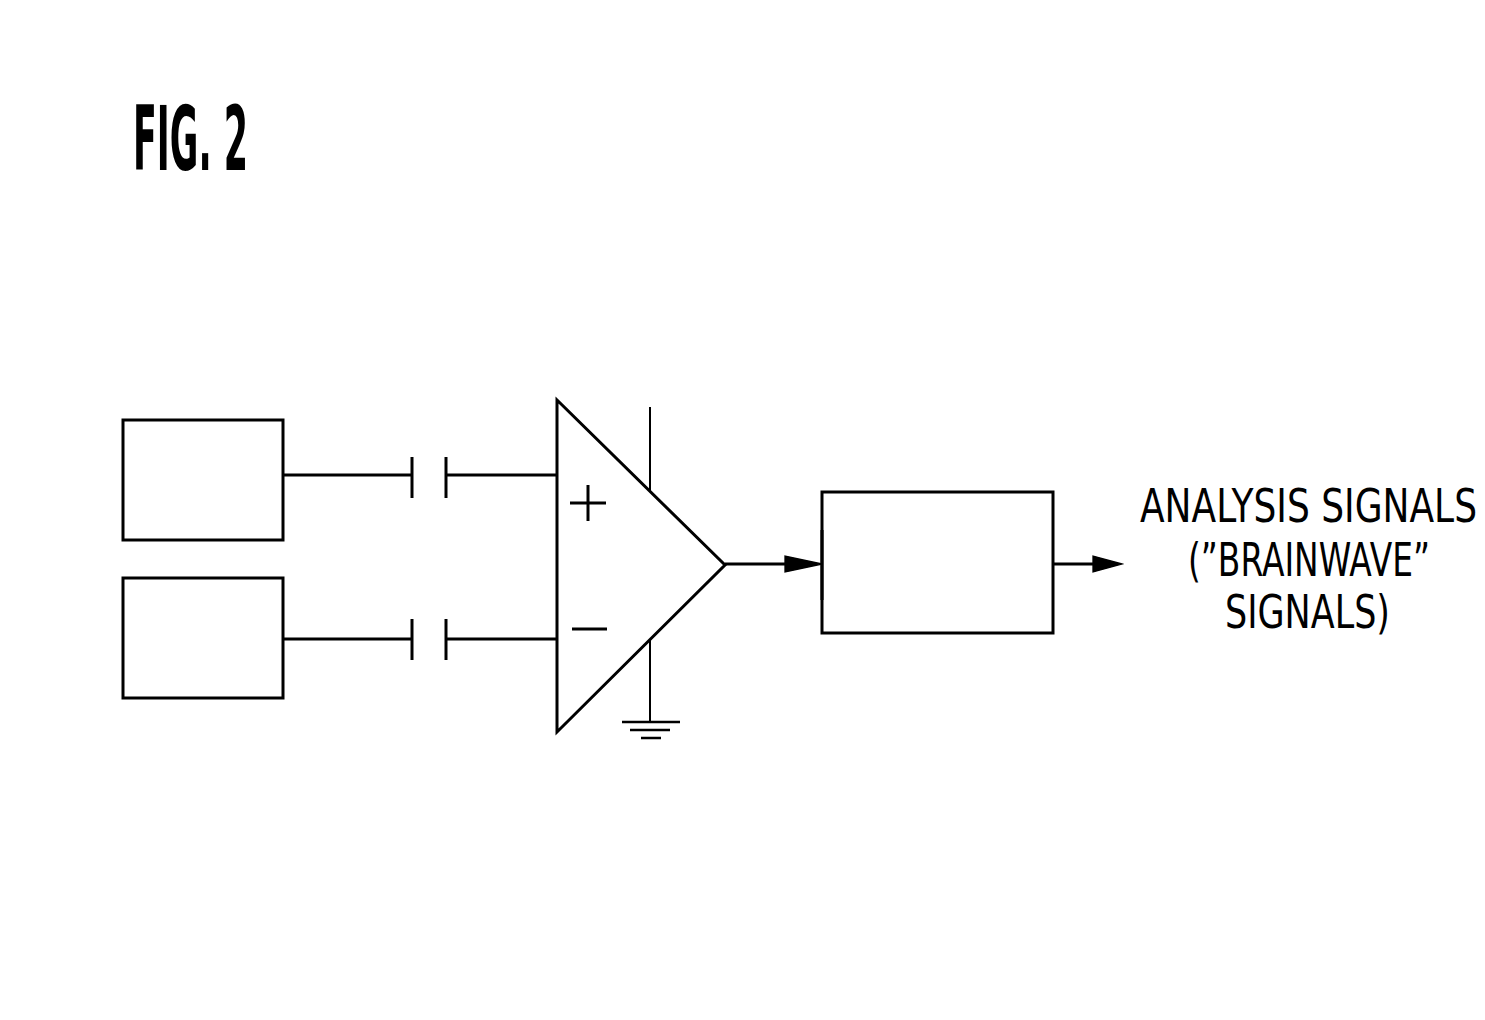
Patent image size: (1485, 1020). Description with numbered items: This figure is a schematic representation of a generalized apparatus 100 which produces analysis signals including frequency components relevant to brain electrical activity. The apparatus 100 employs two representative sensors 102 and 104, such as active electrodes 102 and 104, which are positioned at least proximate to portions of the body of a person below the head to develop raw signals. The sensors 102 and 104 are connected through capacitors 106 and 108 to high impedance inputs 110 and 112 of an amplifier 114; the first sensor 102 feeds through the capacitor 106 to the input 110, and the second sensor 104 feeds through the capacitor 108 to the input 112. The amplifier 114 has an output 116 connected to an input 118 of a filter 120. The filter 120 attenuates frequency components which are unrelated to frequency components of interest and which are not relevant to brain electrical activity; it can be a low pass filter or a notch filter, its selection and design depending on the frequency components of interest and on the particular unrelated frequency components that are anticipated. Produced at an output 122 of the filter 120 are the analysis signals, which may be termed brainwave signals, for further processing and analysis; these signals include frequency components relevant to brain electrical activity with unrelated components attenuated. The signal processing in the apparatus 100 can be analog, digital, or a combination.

The apparatus 100 is at (1070, 337).
The sensor 102 is at (155, 420).
The sensor 104 is at (145, 700).
The capacitor 106 is at (410, 466).
The capacitor 108 is at (410, 630).
The high impedance input 110 is at (520, 473).
The high impedance input 112 is at (530, 637).
The amplifier 114 is at (678, 513).
The output 116 is at (742, 562).
The input 118 is at (820, 566).
The filter 120 is at (912, 490).
The output 122 is at (1067, 562).